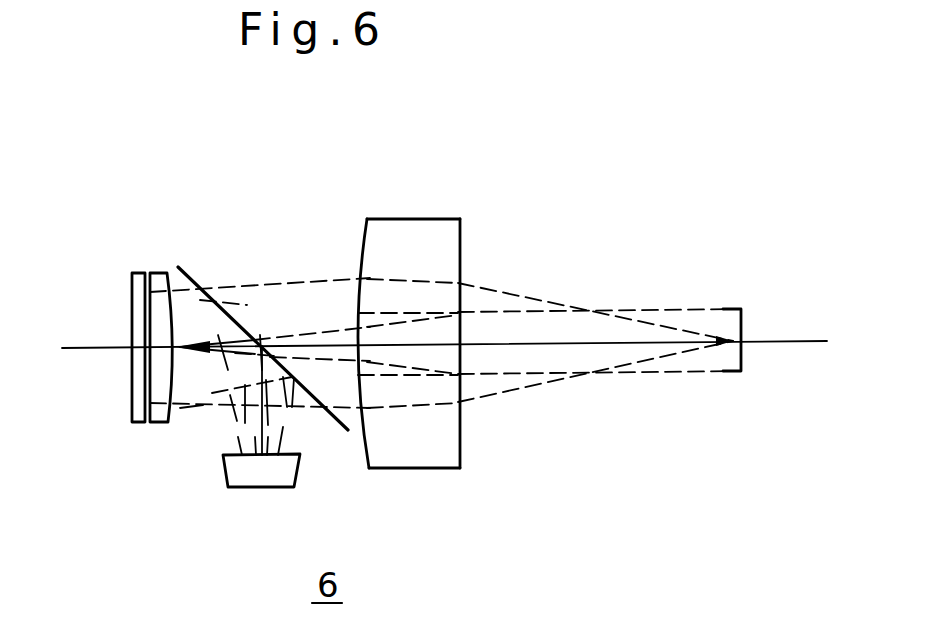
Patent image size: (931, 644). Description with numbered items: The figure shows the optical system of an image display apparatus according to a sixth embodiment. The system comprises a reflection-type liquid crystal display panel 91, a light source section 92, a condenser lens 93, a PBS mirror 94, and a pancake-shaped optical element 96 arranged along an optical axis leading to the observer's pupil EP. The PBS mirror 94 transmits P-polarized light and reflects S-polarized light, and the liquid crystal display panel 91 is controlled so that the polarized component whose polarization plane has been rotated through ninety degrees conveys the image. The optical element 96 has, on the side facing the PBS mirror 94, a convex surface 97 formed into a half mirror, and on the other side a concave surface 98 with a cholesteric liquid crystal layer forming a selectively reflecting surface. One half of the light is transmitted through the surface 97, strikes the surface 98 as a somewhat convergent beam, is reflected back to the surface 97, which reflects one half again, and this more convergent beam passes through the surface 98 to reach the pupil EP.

The reflection-type liquid crystal display panel 91 is at (130, 295).
The light source section 92 is at (230, 478).
The condenser lens 93 is at (157, 272).
The PBS mirror 94 is at (193, 282).
The pancake-shaped optical element 96 is at (409, 366).
The convex surface 97 is at (362, 228).
The concave surface 98 is at (460, 229).
The observer's pupil EP is at (742, 350).